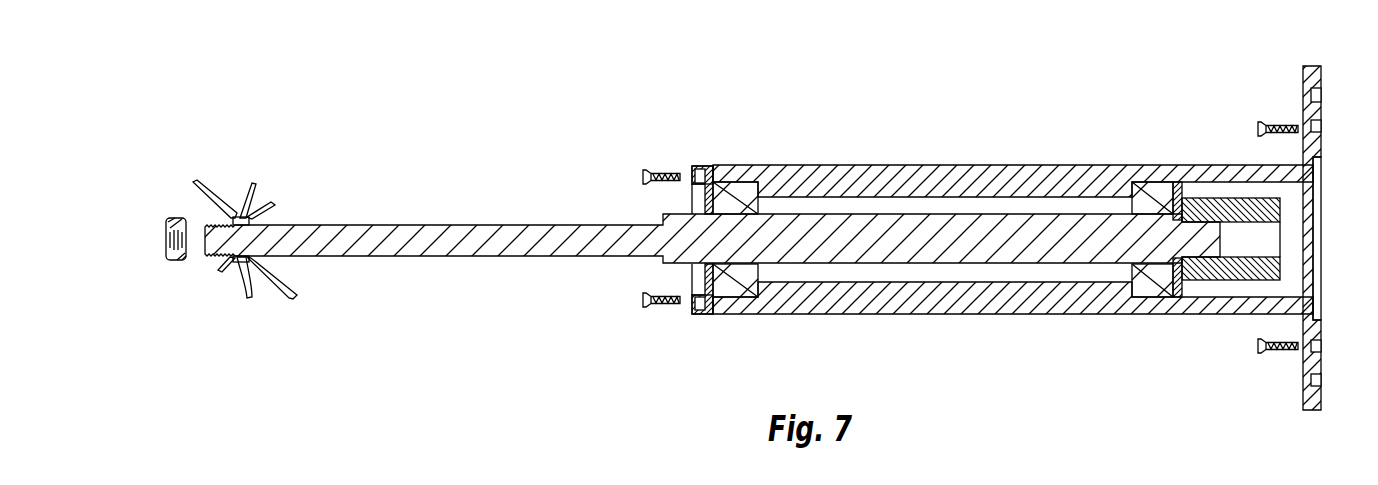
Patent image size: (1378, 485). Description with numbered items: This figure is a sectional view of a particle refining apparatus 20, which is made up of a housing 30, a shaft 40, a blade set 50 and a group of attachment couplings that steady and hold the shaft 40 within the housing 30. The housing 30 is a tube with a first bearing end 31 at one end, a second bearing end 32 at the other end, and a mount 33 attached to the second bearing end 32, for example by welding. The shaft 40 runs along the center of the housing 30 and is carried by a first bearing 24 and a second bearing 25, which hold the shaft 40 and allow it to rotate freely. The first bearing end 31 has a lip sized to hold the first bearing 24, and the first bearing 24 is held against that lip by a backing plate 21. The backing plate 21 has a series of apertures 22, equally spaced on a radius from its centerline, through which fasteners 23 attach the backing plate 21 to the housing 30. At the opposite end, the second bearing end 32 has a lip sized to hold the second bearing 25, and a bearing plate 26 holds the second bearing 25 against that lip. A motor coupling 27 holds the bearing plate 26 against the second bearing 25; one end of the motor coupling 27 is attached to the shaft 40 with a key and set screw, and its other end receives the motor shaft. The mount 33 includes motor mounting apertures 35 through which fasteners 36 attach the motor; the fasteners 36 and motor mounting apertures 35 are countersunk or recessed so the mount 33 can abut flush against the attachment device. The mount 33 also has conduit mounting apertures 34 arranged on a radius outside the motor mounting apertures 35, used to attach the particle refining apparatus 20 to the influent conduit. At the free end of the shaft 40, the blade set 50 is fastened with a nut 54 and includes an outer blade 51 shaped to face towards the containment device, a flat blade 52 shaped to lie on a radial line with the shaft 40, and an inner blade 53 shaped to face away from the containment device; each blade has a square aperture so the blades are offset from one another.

The particle refining apparatus 20 is at (803, 77).
The backing plate 21 is at (704, 166).
The apertures 22 is at (692, 169).
The fasteners 23 is at (642, 177).
The first bearing 24 is at (745, 182).
The second bearing 25 is at (1145, 184).
The bearing plate 26 is at (1155, 314).
The motor coupling 27 is at (1232, 273).
The housing 30 is at (980, 315).
The first bearing end 31 is at (737, 315).
The second bearing end 32 is at (1298, 297).
The mount 33 is at (1310, 397).
The conduit mounting apertures 34 is at (1320, 94).
The motor mounting apertures 35 is at (1320, 126).
The fasteners 36 is at (1258, 128).
The shaft 40 is at (542, 258).
The blade set 50 is at (217, 323).
The outer blade 51 is at (197, 181).
The flat blade 52 is at (253, 185).
The inner blade 53 is at (268, 200).
The nut 54 is at (165, 238).